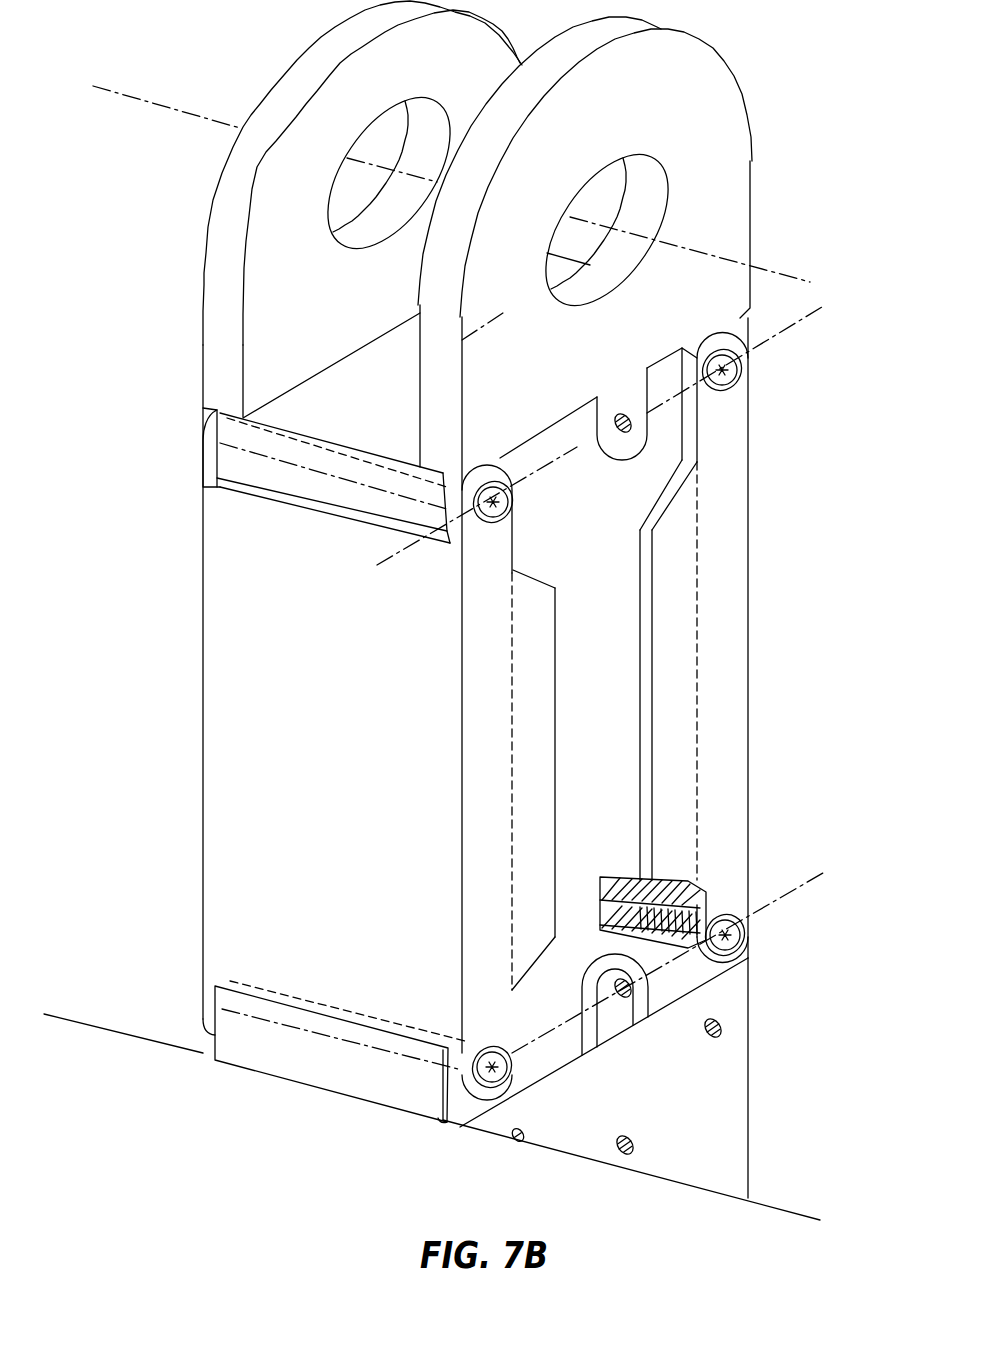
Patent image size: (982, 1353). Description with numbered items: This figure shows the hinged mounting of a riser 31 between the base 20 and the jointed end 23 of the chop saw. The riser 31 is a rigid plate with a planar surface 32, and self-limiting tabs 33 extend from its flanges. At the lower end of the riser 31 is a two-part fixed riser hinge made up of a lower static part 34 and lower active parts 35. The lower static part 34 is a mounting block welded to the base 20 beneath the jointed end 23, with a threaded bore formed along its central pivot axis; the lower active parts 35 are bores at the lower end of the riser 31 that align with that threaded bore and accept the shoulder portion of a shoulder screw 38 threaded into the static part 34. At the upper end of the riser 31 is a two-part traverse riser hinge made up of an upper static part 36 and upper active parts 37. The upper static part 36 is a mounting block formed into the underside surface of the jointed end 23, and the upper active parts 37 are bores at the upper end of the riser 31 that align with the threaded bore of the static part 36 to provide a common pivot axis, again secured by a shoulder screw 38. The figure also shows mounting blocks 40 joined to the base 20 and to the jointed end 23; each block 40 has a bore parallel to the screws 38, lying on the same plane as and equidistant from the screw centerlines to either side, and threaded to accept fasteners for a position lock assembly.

The base 20 is at (728, 1110).
The jointed end 23 is at (717, 190).
The riser 31 is at (203, 700).
The planar surface 32 is at (316, 743).
The self-limiting tab 33 is at (521, 796).
The lower static part 34 is at (311, 1048).
The lower active part 35 is at (203, 1007).
The upper static part 36 is at (250, 465).
The upper active part 37 is at (197, 467).
The shoulder screw 38 is at (753, 378).
The mounting block 40 is at (623, 407).